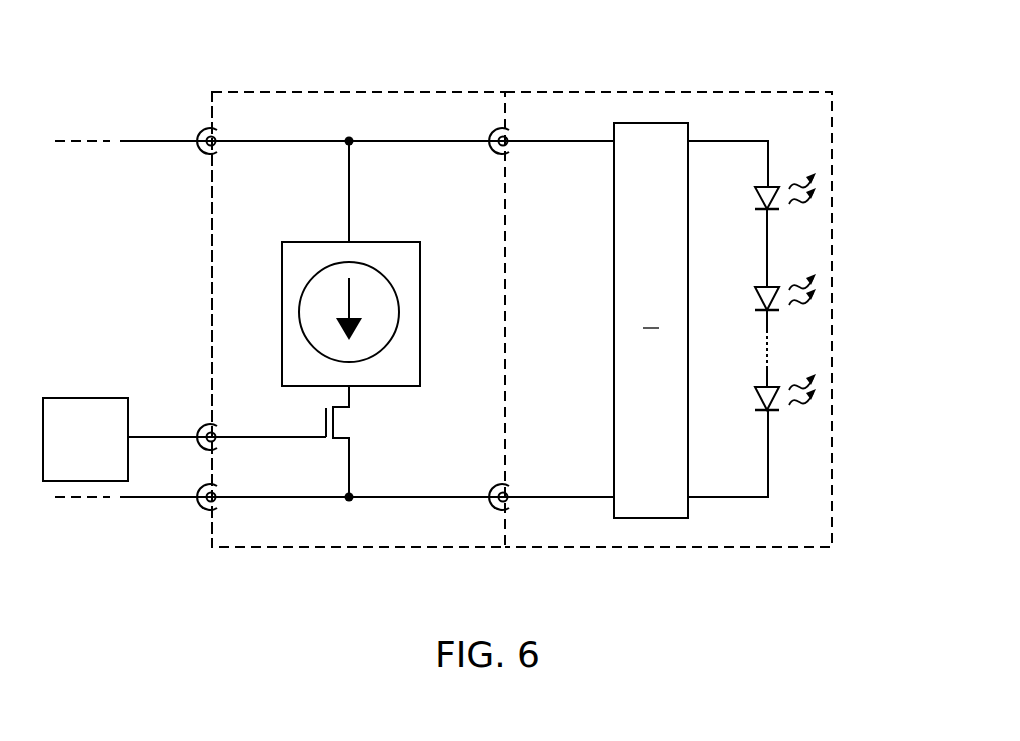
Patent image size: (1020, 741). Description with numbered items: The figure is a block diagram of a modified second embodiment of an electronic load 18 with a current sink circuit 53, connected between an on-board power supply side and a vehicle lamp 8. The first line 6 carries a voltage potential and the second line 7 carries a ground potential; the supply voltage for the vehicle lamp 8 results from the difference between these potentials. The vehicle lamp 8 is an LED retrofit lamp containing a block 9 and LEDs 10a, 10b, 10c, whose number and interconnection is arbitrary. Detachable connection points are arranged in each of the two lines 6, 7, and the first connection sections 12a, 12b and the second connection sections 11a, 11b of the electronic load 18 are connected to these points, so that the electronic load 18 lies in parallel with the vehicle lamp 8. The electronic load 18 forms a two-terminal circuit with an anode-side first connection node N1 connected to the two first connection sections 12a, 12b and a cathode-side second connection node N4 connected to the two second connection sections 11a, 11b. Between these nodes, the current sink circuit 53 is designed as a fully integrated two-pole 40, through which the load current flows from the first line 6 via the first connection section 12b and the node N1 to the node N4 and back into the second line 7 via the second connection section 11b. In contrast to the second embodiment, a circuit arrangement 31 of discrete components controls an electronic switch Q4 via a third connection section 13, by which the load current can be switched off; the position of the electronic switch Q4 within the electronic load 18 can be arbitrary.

The first line 6 is at (103, 140).
The second line 7 is at (105, 497).
The vehicle lamp 8 is at (745, 547).
The block 9 is at (651, 320).
The LED 10a is at (800, 210).
The LED 10b is at (800, 311).
The LED 10c is at (800, 411).
The second connection section 11a is at (498, 500).
The second connection section 11b is at (218, 501).
The first connection section 12a is at (498, 138).
The first connection section 12b is at (216, 138).
The third connection section 13 is at (218, 432).
The electronic load 18 is at (361, 547).
The circuit arrangement 31 is at (73, 398).
The fully integrated two-pole 40 is at (282, 310).
The current sink circuit 53 is at (230, 246).
The first connection node N1 is at (348, 140).
The second connection node N4 is at (349, 496).
The electronic switch Q4 is at (346, 428).